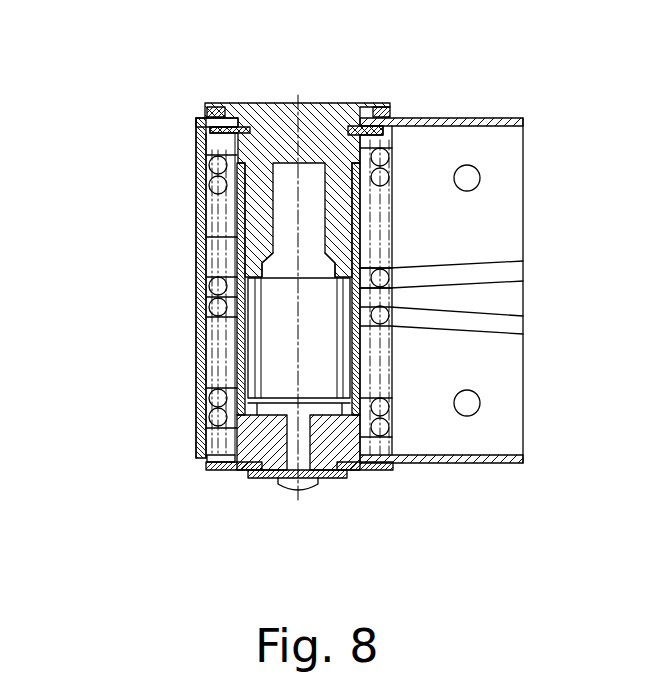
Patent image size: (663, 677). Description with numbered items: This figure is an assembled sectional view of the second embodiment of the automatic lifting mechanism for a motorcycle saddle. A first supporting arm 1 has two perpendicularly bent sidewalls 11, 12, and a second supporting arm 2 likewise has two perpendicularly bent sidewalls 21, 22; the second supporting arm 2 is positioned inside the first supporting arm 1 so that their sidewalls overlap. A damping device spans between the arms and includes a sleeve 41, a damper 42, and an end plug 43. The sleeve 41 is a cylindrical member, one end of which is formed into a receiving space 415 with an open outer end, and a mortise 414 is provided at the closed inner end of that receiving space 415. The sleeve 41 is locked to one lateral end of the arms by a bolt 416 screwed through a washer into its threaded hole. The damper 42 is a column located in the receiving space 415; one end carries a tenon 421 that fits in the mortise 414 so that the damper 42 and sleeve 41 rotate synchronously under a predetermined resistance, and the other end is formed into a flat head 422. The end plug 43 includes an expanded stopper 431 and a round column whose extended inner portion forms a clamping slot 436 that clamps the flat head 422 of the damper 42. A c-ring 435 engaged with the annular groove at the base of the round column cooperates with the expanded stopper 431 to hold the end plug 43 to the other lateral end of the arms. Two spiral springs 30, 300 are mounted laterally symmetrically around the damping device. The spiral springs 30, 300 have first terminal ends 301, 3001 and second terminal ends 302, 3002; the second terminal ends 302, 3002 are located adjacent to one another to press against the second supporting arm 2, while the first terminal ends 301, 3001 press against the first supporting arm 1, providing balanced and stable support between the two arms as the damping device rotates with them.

The first supporting arm 1 is at (197, 322).
The second supporting arm 2 is at (508, 428).
The first sidewall 11 is at (198, 470).
The second sidewall 12 is at (207, 106).
The first sidewall 21 is at (200, 120).
The second sidewall 22 is at (229, 470).
The spiral spring 30 is at (207, 187).
The sleeve 41 is at (354, 472).
The damper 42 is at (273, 337).
The end plug 43 is at (290, 180).
The spiral spring 300 is at (208, 398).
The first terminal end 301 is at (207, 164).
The second terminal end 302 is at (525, 270).
The mortise 414 is at (240, 440).
The receiving space 415 is at (252, 265).
The bolt 416 is at (313, 492).
The tenon 421 is at (336, 439).
The flat head 422 is at (205, 160).
The expanded stopper 431 is at (385, 112).
The c-ring 435 is at (352, 125).
The clamping slot 436 is at (278, 226).
The first terminal end 3001 is at (208, 417).
The second terminal end 3002 is at (518, 325).